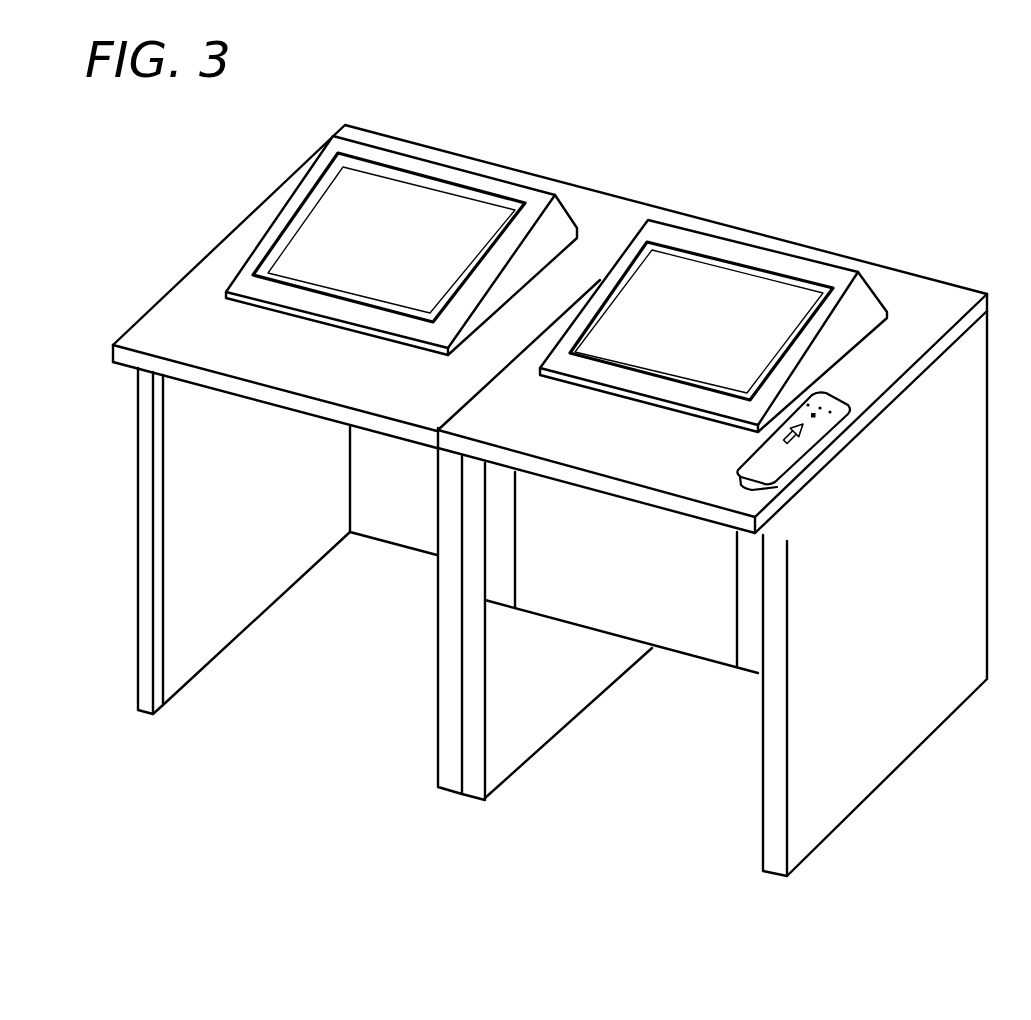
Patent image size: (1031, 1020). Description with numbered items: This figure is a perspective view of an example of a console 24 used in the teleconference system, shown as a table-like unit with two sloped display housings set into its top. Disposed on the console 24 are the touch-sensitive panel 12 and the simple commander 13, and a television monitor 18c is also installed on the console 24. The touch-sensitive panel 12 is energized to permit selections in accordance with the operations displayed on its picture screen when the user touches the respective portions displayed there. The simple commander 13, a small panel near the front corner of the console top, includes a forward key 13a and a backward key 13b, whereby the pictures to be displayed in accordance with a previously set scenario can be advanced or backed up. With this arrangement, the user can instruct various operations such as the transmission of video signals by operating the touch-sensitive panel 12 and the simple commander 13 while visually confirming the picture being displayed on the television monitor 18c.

The touch-sensitive panel 12 is at (718, 284).
The simple commander 13 is at (840, 477).
The forward key 13a is at (801, 428).
The backward key 13b is at (790, 447).
The television monitor 18c is at (406, 206).
The console 24 is at (929, 737).